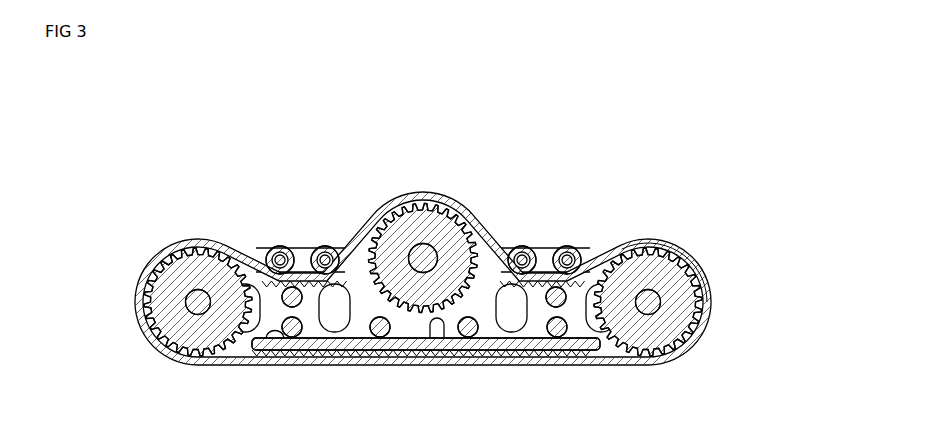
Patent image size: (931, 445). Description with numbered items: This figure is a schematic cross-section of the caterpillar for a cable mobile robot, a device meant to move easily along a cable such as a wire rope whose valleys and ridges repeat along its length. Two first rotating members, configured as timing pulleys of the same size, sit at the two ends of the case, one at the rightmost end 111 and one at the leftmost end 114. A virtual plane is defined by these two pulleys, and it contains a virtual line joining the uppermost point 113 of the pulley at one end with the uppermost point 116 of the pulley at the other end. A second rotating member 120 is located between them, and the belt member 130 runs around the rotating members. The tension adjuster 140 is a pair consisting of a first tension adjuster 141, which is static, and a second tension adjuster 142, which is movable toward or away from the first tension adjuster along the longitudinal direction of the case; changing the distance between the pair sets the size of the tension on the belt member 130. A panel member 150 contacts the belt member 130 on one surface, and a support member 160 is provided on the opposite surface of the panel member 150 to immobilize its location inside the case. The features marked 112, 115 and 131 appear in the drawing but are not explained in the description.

The rightmost end 111 is at (168, 252).
The first shaft 112 is at (200, 365).
The uppermost point 113 is at (204, 246).
The leftmost end 114 is at (621, 250).
The second shaft 115 is at (655, 366).
The uppermost point 116 is at (651, 243).
The second rotating member 120 is at (425, 200).
The belt member 130 is at (320, 365).
The rack support 131 is at (264, 283).
The tension adjuster 140 is at (424, 211).
The first tension adjuster 141 is at (567, 246).
The second tension adjuster 142 is at (522, 246).
The panel member 150 is at (437, 326).
The support member 160 is at (558, 340).